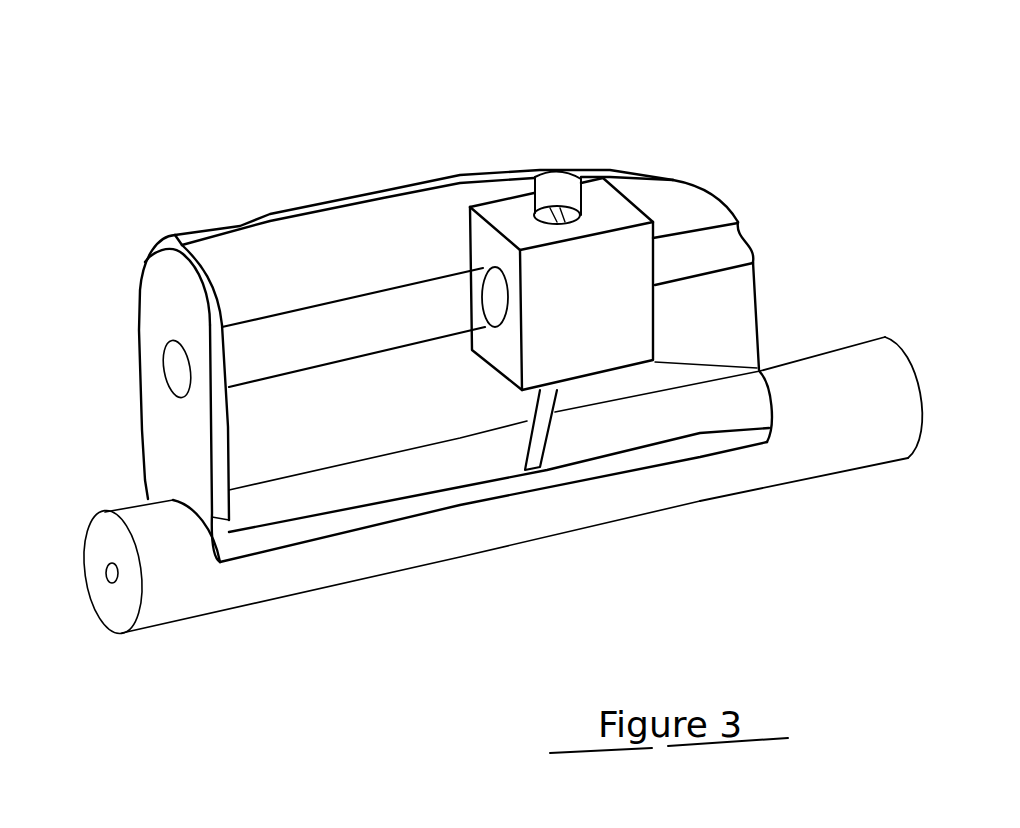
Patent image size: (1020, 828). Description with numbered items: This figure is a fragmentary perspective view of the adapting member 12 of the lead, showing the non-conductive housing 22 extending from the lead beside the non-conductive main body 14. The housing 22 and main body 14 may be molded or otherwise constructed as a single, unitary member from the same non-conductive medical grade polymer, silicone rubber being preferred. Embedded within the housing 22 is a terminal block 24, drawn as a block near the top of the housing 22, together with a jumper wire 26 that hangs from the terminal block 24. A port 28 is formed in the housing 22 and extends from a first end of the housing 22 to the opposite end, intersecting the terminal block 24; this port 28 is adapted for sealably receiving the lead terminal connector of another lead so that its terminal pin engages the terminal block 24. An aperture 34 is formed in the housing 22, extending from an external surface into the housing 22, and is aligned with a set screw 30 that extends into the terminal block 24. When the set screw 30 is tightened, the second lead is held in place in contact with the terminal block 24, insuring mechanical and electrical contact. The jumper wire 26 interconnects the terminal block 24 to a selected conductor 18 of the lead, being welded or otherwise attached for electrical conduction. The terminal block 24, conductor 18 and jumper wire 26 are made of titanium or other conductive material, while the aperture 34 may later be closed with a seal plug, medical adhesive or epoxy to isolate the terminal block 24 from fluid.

The adapting member 12 is at (285, 205).
The non-conductive main body 14 is at (822, 378).
The conductor 18 is at (110, 580).
The non-conductive housing 22 is at (300, 440).
The terminal block 24 is at (502, 217).
The jumper wire 26 is at (550, 413).
The port 28 is at (357, 315).
The set screw 30 is at (587, 185).
The aperture 34 is at (547, 187).